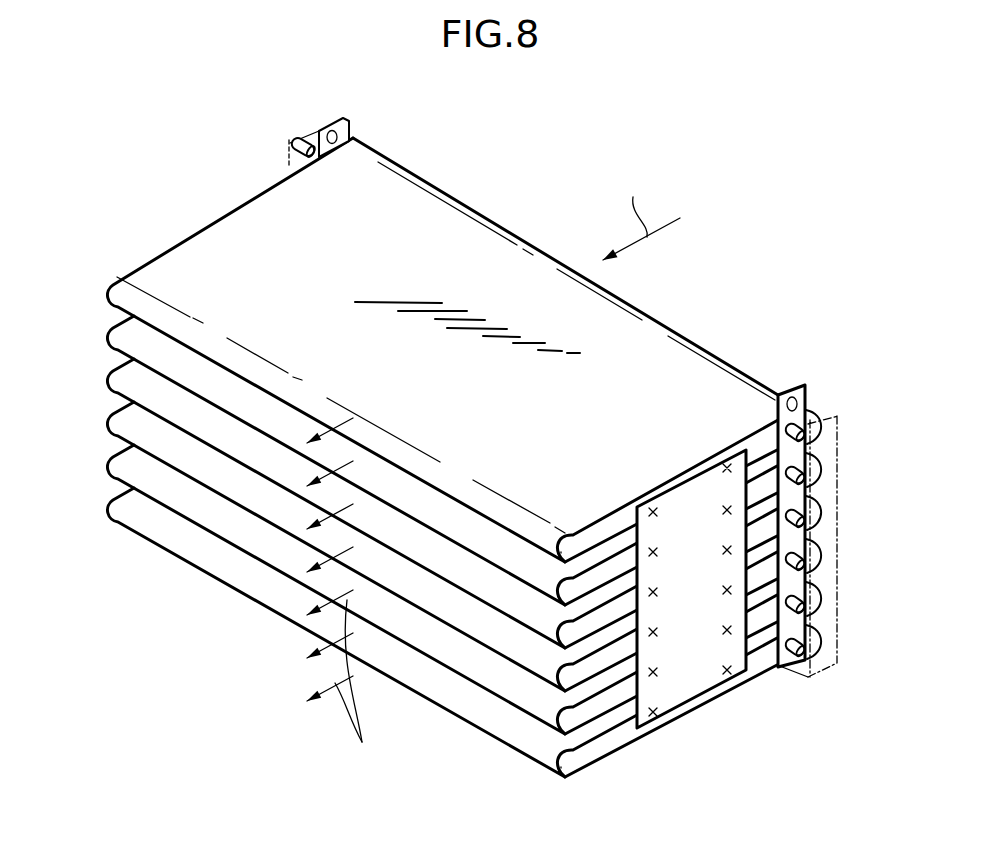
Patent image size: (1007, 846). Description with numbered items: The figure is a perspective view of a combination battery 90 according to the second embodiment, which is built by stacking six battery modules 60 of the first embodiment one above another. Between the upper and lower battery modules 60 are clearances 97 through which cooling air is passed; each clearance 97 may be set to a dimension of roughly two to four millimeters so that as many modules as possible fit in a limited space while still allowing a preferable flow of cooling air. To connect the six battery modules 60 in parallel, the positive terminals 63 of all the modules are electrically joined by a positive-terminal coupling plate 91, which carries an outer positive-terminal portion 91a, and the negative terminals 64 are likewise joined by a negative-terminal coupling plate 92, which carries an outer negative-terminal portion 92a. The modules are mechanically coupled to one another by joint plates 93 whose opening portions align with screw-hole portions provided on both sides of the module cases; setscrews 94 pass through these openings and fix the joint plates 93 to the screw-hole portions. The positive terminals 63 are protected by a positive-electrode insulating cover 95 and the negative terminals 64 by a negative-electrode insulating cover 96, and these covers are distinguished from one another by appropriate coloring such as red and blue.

The combination battery 90 is at (180, 158).
The battery module 60 is at (163, 393).
The positive-electrode insulating cover 95 is at (283, 160).
The positive terminal 63 is at (302, 137).
The positive-terminal coupling plate 91 is at (349, 131).
The outer positive-terminal portion 91a is at (337, 122).
The negative-terminal coupling plate 92 is at (776, 427).
The outer negative-terminal portion 92a is at (797, 392).
The negative terminal 64 is at (817, 412).
The joint plate 93 is at (680, 703).
The setscrew 94 is at (662, 548).
The negative-electrode insulating cover 96 is at (823, 678).
The clearance 97 is at (612, 593).